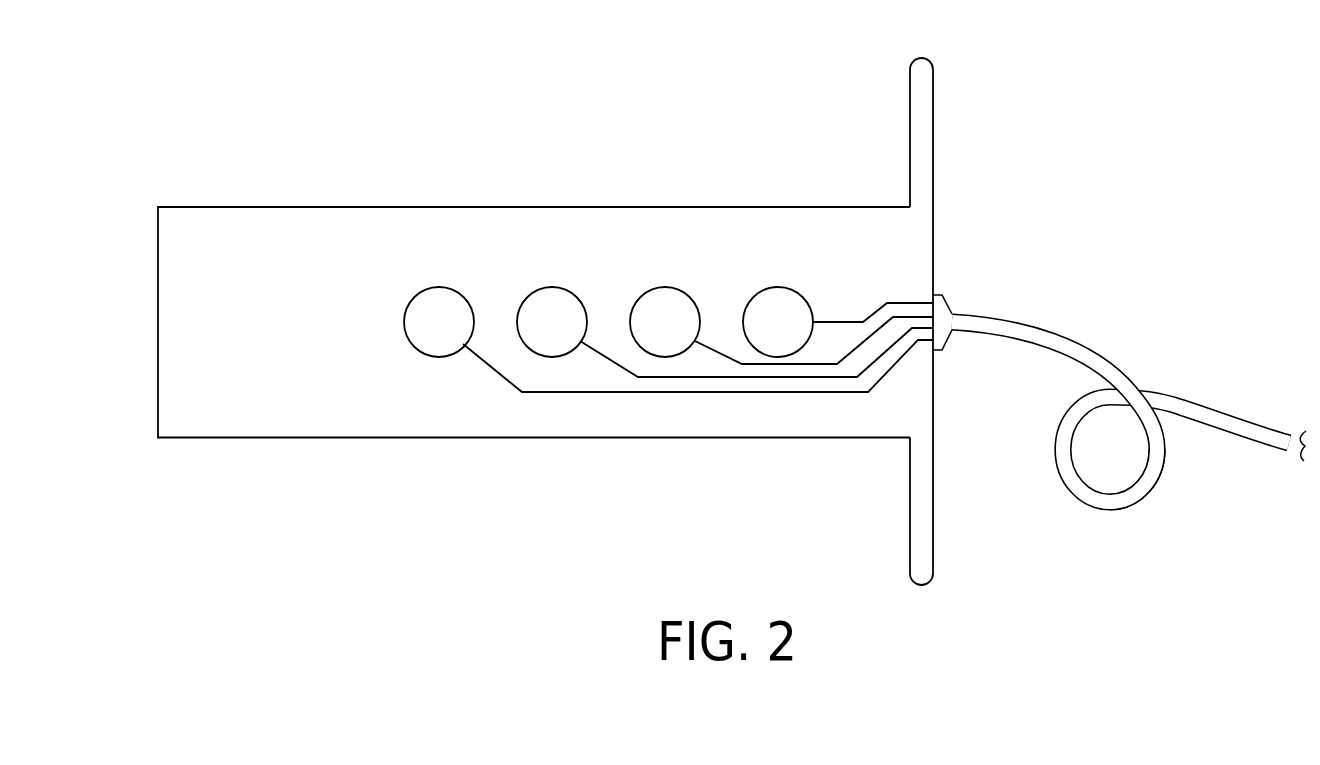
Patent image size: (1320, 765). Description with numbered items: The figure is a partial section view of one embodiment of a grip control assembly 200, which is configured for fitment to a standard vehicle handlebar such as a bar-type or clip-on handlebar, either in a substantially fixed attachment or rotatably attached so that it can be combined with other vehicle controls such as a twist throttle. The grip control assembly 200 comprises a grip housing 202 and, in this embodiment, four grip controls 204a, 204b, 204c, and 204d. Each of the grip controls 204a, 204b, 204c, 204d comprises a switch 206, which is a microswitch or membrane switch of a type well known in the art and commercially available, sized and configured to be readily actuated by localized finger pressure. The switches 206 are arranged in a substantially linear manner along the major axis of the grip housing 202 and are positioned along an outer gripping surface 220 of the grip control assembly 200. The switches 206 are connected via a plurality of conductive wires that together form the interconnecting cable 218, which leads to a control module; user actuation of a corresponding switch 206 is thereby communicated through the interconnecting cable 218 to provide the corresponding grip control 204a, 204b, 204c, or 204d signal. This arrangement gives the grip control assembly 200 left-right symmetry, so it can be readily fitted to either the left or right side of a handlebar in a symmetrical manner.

The grip control assembly 200 is at (398, 118).
The grip housing 202 is at (262, 207).
The grip control 204a is at (434, 370).
The grip control 204b is at (548, 370).
The grip control 204c is at (663, 370).
The grip control 204d is at (777, 370).
The switch 206 is at (756, 271).
The interconnecting cable 218 is at (1118, 372).
The outer gripping surface 220 is at (777, 230).